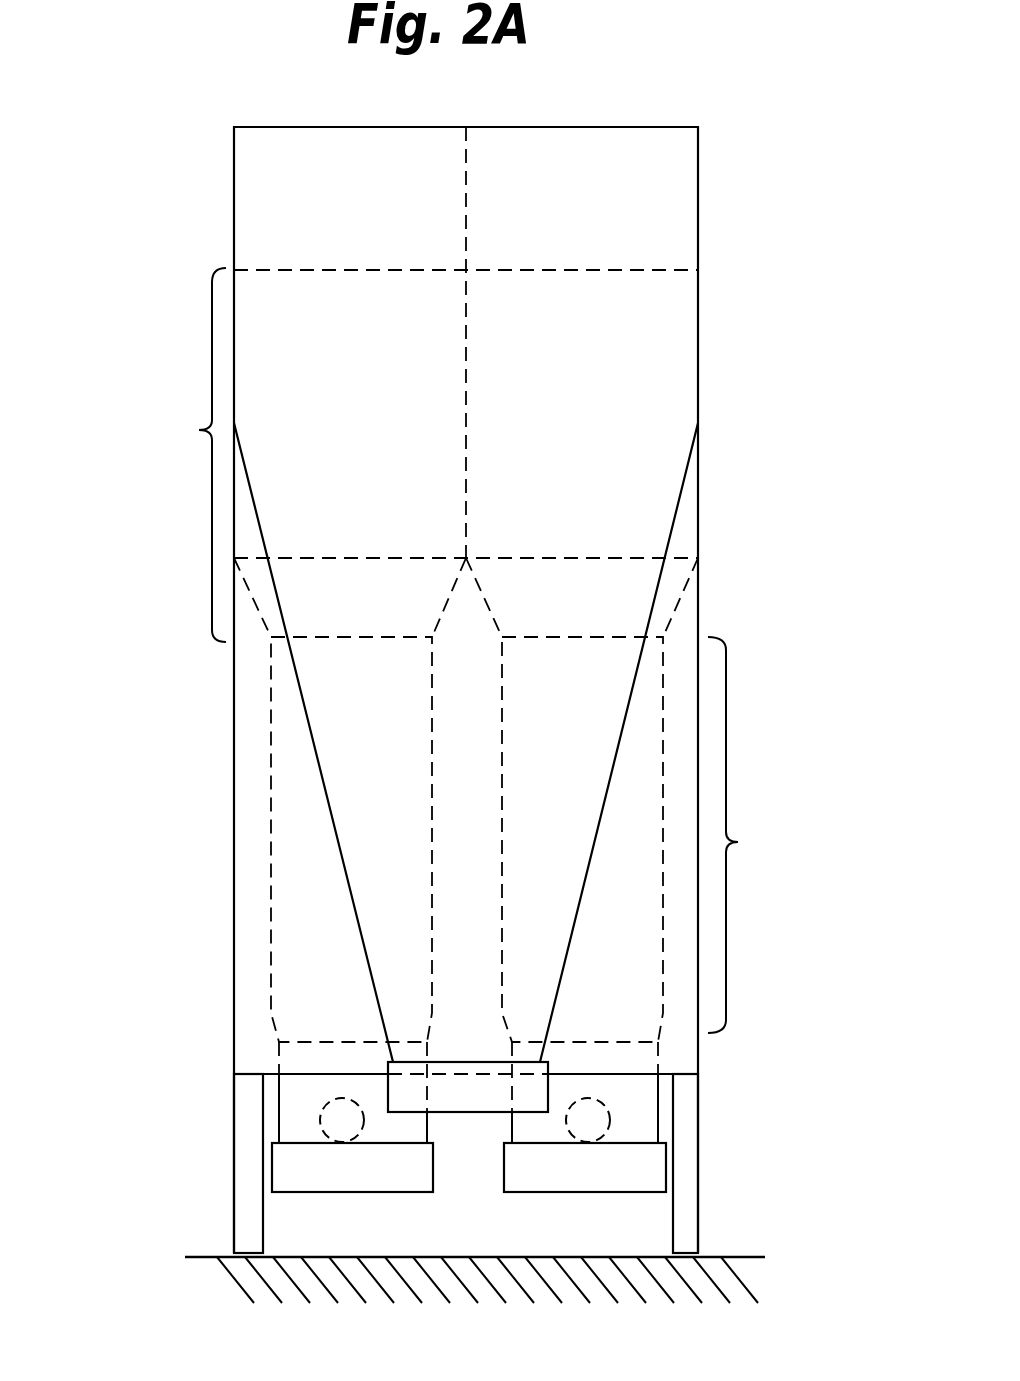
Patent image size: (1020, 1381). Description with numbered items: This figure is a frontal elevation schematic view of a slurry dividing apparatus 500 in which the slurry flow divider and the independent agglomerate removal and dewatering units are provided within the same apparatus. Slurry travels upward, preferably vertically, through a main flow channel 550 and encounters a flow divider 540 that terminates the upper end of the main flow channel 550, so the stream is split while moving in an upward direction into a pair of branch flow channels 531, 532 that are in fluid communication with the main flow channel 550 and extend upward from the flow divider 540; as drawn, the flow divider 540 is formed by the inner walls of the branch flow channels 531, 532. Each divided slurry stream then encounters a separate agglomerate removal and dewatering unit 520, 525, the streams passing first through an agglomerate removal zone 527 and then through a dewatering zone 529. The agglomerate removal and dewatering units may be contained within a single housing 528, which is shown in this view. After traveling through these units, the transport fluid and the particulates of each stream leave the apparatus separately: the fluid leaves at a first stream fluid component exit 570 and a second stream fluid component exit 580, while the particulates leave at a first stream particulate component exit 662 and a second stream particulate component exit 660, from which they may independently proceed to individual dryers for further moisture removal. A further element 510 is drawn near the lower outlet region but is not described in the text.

The slurry dividing apparatus 500 is at (434, 672).
The outlet block 510 is at (466, 1113).
The agglomerate removal and dewatering unit 520 is at (265, 624).
The agglomerate removal and dewatering unit 525 is at (678, 603).
The agglomerate removal zone 527 is at (187, 455).
The housing 528 is at (233, 906).
The dewatering zone 529 is at (747, 835).
The branch flow channel 531 is at (274, 335).
The branch flow channel 532 is at (668, 322).
The flow divider 540 is at (467, 213).
The main flow channel 550 is at (672, 525).
The first stream fluid component exit 570 is at (302, 1193).
The second stream fluid component exit 580 is at (650, 1193).
The second stream particulate component exit 660 is at (596, 1113).
The first stream particulate component exit 662 is at (327, 1127).